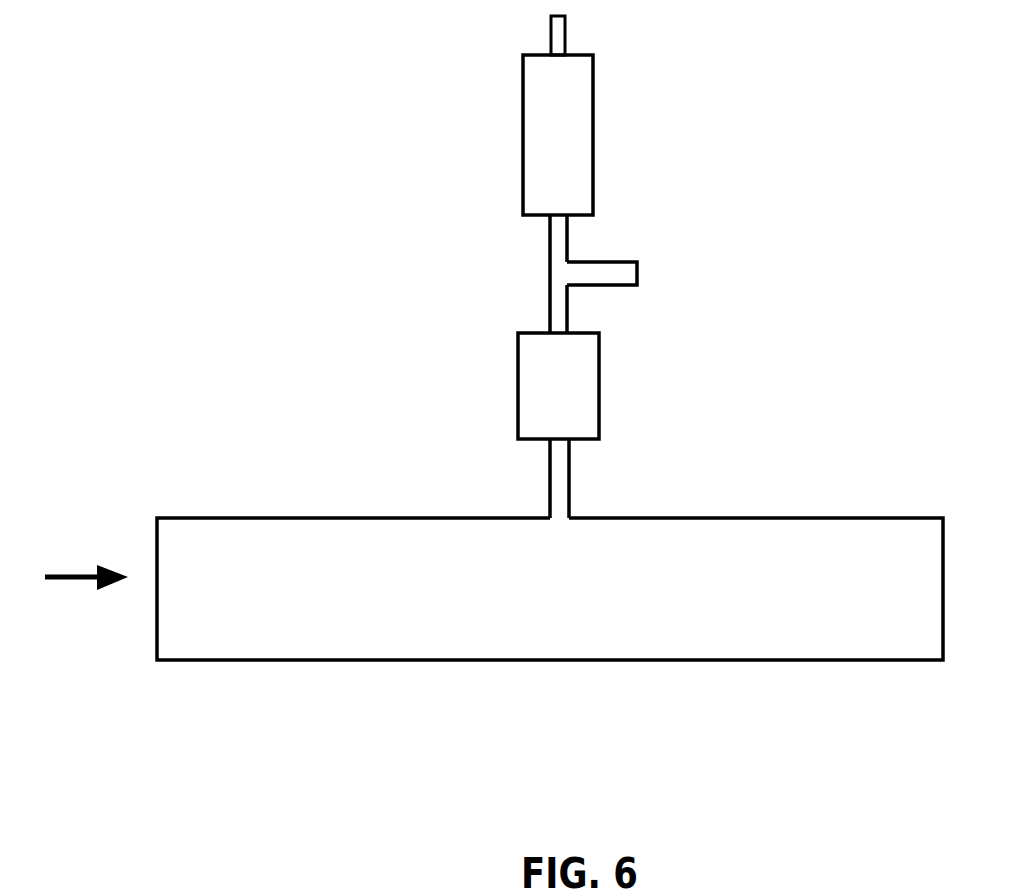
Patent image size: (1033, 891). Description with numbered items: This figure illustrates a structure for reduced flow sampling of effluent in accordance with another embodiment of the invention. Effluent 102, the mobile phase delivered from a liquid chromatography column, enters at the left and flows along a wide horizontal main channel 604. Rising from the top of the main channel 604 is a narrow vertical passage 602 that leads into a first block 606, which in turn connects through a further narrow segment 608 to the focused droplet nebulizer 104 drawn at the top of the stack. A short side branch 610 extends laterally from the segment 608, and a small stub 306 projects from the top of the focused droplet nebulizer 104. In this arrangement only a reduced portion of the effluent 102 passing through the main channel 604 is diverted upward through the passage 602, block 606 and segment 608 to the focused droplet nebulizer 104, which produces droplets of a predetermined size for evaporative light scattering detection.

The effluent 102 is at (80, 582).
The focused droplet nebulizer 104 is at (558, 152).
The output terminal 306 is at (566, 36).
The coupling waveguide 602 is at (568, 493).
The main waveguide 604 is at (400, 628).
The filter / resonator block 606 is at (583, 388).
The connecting waveguide 608 is at (558, 272).
The side branch / tap 610 is at (612, 272).